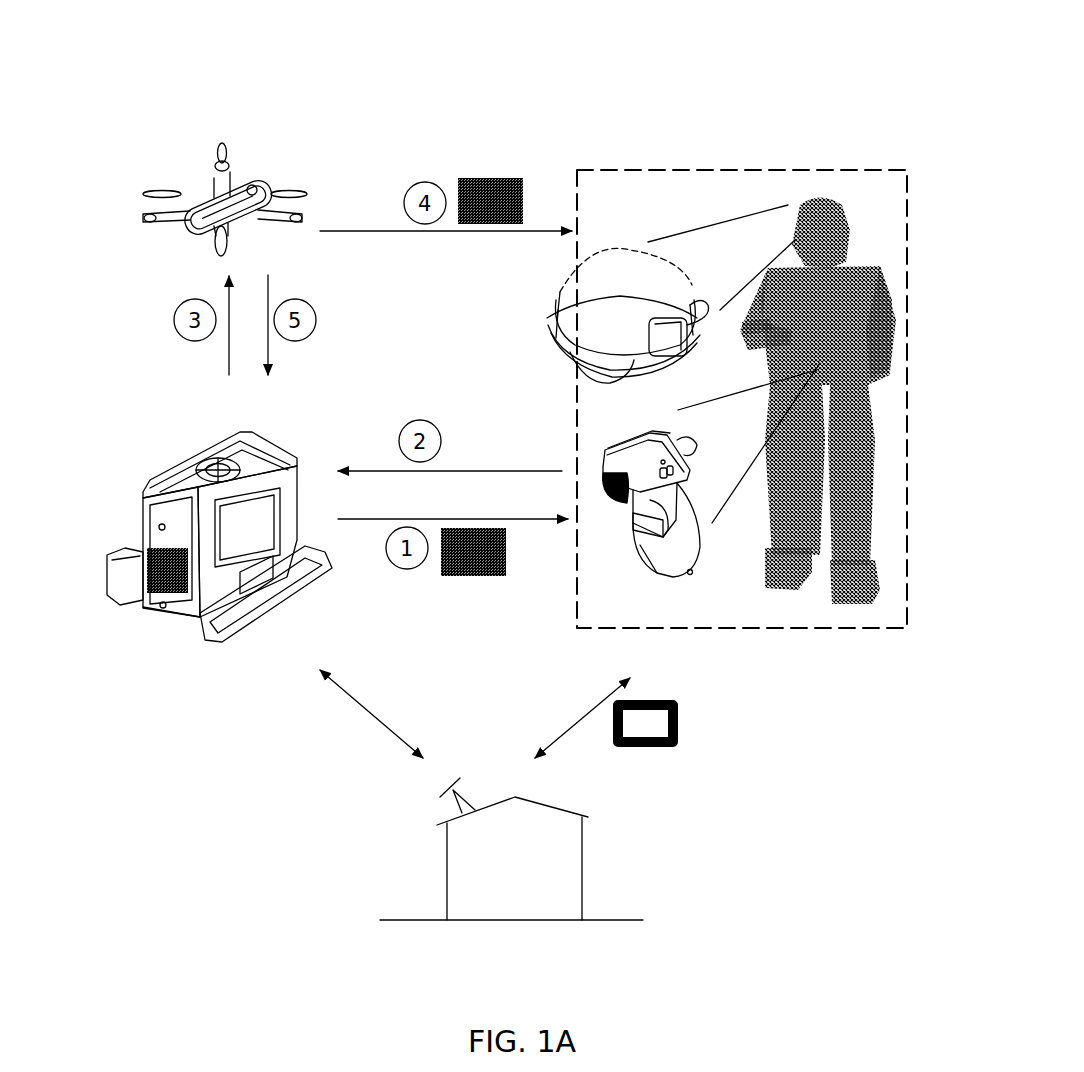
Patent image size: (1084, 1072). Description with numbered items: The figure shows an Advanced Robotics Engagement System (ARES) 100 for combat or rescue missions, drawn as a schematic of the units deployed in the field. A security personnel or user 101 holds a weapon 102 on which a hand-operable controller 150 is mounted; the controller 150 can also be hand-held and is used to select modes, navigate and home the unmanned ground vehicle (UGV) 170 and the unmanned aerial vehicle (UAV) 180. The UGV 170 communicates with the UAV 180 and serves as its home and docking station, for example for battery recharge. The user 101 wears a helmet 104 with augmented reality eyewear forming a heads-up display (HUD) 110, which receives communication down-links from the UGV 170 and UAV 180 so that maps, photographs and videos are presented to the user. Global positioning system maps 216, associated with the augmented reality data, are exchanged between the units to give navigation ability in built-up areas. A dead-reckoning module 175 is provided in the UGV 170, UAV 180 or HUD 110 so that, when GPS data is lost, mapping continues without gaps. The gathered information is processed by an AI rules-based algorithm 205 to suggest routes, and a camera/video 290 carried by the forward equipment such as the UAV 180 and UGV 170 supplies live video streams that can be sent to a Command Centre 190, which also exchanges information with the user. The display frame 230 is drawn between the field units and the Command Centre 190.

The Advanced Robotics Engagement System (ARES) 100 is at (680, 90).
The security personnel or user 101 is at (742, 415).
The weapon 102 is at (860, 367).
The helmet 104 is at (618, 282).
The heads-up display (HUD) 110 is at (538, 284).
The hand-operable controller 150 is at (650, 515).
The unmanned ground vehicle (UGV) 170 is at (219, 530).
The dead-reckoning module 175 is at (162, 572).
The unmanned aerial vehicle (UAV) 180 is at (225, 184).
The Command Centre 190 is at (511, 849).
The AI rules-based algorithm 205 is at (180, 585).
The global positioning system maps 216 is at (485, 178).
The display frame 230 is at (657, 720).
The camera/video 290 is at (254, 186).